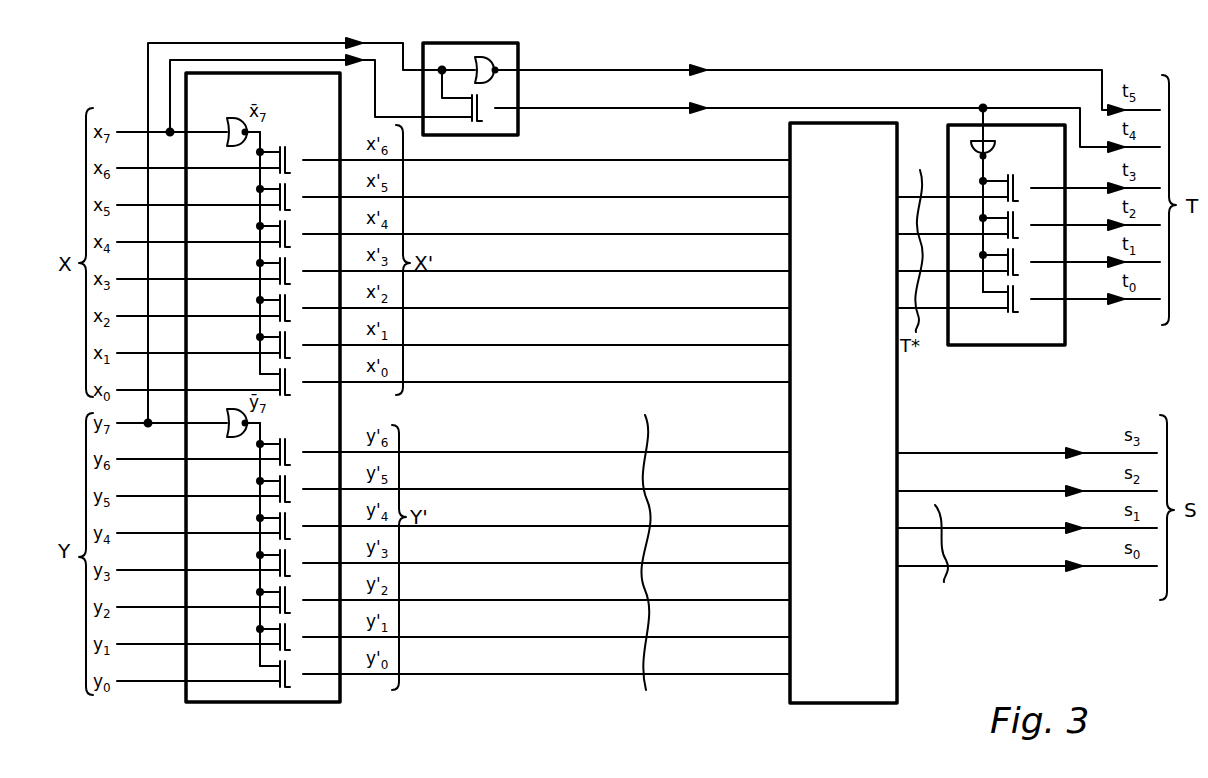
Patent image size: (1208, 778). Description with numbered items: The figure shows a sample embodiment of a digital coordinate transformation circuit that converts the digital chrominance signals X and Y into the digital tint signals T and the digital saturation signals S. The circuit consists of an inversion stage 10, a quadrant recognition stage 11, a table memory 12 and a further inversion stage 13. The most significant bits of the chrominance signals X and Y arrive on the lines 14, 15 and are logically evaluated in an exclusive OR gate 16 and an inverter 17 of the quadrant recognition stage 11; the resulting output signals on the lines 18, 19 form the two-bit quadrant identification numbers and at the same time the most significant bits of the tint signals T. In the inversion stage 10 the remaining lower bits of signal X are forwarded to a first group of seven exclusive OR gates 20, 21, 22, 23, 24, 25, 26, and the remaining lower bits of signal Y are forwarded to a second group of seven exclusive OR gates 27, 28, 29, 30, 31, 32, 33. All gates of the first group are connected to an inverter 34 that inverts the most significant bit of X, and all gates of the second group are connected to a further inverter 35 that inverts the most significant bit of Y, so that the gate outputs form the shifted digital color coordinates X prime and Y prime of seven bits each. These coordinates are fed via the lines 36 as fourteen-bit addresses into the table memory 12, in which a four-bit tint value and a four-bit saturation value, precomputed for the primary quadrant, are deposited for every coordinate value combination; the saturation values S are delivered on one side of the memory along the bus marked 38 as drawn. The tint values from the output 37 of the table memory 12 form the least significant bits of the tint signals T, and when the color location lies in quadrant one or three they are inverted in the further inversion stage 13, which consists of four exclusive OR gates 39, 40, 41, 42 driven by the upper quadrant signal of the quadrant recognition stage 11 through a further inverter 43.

The inversion stage 10 is at (219, 697).
The quadrant recognition stage 11 is at (516, 55).
The table memory 12 is at (827, 692).
The further inversion stage 13 is at (968, 336).
The line 14 is at (378, 88).
The line 15 is at (148, 78).
The exclusive OR gate 16 is at (494, 114).
The inverter 17 is at (475, 60).
The line 18 is at (606, 110).
The line 19 is at (635, 70).
The exclusive OR gate 20 is at (299, 157).
The exclusive OR gate 21 is at (299, 194).
The exclusive OR gate 22 is at (299, 231).
The exclusive OR gate 23 is at (299, 268).
The exclusive OR gate 24 is at (299, 305).
The exclusive OR gate 25 is at (299, 342).
The exclusive OR gate 26 is at (299, 379).
The exclusive OR gate 27 is at (299, 449).
The exclusive OR gate 28 is at (299, 486).
The exclusive OR gate 29 is at (299, 523).
The exclusive OR gate 30 is at (299, 560).
The exclusive OR gate 31 is at (299, 597).
The exclusive OR gate 32 is at (299, 634).
The exclusive OR gate 33 is at (299, 671).
The inverter 34 is at (228, 118).
The further inverter 35 is at (228, 436).
The lines 36 is at (645, 565).
The output 37 is at (911, 238).
The bus lines 38 is at (942, 559).
The exclusive OR gate 39 is at (1027, 185).
The exclusive OR gate 40 is at (1027, 222).
The exclusive OR gate 41 is at (1027, 259).
The exclusive OR gate 42 is at (1027, 296).
The further inverter 43 is at (996, 148).